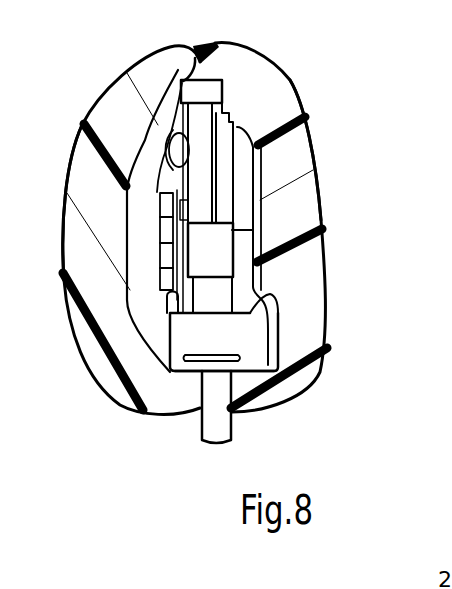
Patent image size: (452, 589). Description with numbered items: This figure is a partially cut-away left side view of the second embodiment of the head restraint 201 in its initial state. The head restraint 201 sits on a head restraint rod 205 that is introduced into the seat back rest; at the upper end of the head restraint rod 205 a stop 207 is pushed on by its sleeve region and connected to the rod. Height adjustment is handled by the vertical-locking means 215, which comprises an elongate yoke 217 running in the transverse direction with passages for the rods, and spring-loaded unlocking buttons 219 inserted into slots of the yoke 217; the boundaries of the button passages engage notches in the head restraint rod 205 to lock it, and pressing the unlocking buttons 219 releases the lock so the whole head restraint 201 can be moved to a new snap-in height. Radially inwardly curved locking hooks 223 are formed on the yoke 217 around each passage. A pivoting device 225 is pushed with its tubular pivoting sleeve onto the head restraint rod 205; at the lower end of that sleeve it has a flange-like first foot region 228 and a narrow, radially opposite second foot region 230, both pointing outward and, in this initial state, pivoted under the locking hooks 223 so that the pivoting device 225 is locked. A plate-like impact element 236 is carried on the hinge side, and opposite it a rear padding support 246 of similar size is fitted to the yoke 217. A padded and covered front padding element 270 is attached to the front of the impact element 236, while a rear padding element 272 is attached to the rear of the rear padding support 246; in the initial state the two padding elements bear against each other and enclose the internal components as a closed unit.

The head restraint 201 is at (167, 441).
The head restraint rod 205 is at (222, 427).
The stop 207 is at (205, 92).
The vertical-locking means 215 is at (244, 375).
The yoke 217 is at (227, 337).
The unlocking button 219 is at (262, 378).
The locking hook 223 is at (262, 302).
The pivoting device 225 is at (234, 248).
The first foot region 228 is at (262, 305).
The second foot region 230 is at (168, 332).
The impact element 236 is at (150, 237).
The rear padding support 246 is at (238, 187).
The front padding element 270 is at (163, 100).
The rear padding element 272 is at (272, 138).